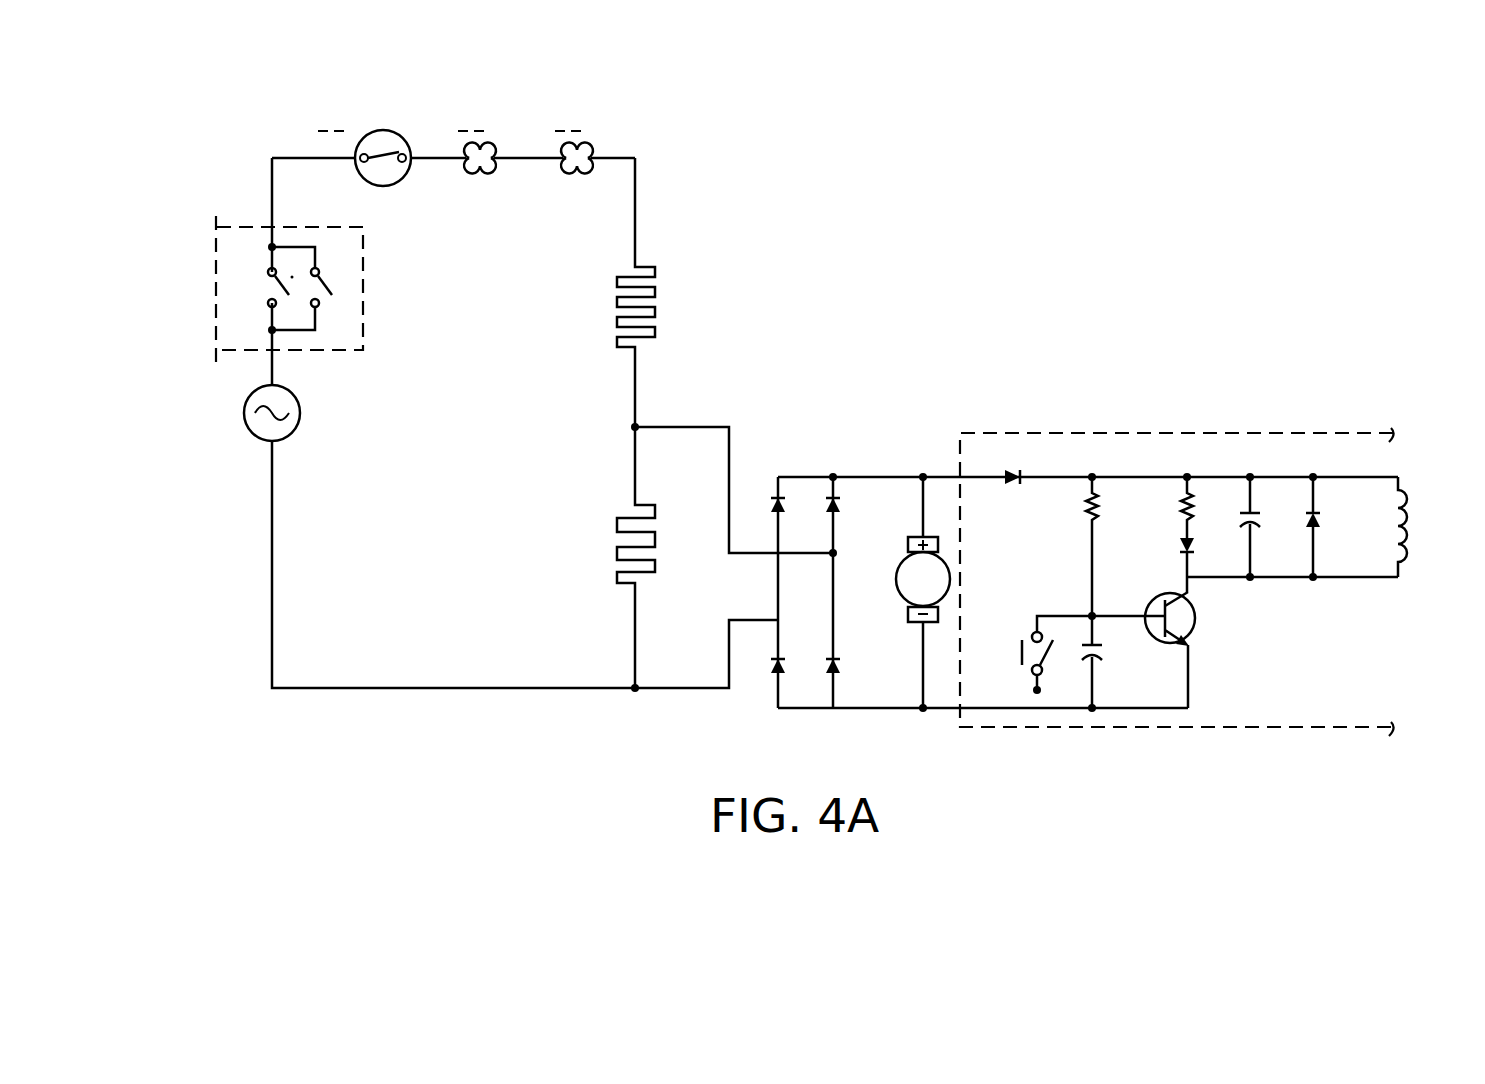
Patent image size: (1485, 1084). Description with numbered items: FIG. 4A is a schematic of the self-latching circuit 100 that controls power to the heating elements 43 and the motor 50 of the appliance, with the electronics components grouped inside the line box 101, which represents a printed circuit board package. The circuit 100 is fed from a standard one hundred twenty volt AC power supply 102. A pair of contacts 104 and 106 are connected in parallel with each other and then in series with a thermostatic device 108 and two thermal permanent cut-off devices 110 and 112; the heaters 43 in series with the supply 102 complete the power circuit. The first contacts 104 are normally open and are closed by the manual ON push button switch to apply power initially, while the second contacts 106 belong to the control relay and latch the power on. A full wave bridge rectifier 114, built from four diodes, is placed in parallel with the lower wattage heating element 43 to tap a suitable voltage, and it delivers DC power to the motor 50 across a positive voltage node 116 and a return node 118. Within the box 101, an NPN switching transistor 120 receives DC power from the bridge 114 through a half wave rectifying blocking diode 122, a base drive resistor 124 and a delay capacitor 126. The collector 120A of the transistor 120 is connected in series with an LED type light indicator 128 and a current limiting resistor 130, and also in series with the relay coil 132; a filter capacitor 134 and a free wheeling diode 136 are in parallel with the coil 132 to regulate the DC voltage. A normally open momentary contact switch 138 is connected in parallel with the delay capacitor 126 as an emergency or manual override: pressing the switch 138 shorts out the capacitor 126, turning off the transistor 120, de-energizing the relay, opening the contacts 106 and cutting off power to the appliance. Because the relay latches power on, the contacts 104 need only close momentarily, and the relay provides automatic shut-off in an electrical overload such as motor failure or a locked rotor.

The self-latching circuit 100 is at (784, 186).
The line box 101 is at (325, 350).
The power supply 102 is at (258, 440).
The first set of contacts 104 is at (268, 298).
The second set of contacts 106 is at (327, 307).
The thermostatic device 108 is at (388, 185).
The thermal permanent cut-off device 110 is at (481, 168).
The thermal permanent cut-off device 112 is at (578, 168).
The heating elements 43 is at (617, 298).
The full wave bridge rectifier 114 is at (815, 432).
The positive voltage node 116 is at (922, 474).
The return node 118 is at (922, 710).
The motor 50 is at (896, 590).
The blocking diode 122 is at (1022, 477).
The base drive resistor 124 is at (1080, 505).
The delay capacitor 126 is at (1087, 692).
The momentary contact switch 138 is at (1047, 628).
The current limiting resistor 130 is at (1177, 508).
The LED type light indicator 128 is at (1197, 546).
The transistor 120 is at (1193, 651).
The transistor collector 120A is at (1197, 577).
The filter capacitor 134 is at (1283, 517).
The free wheeling diode 136 is at (1327, 513).
The relay coil 132 is at (1406, 538).